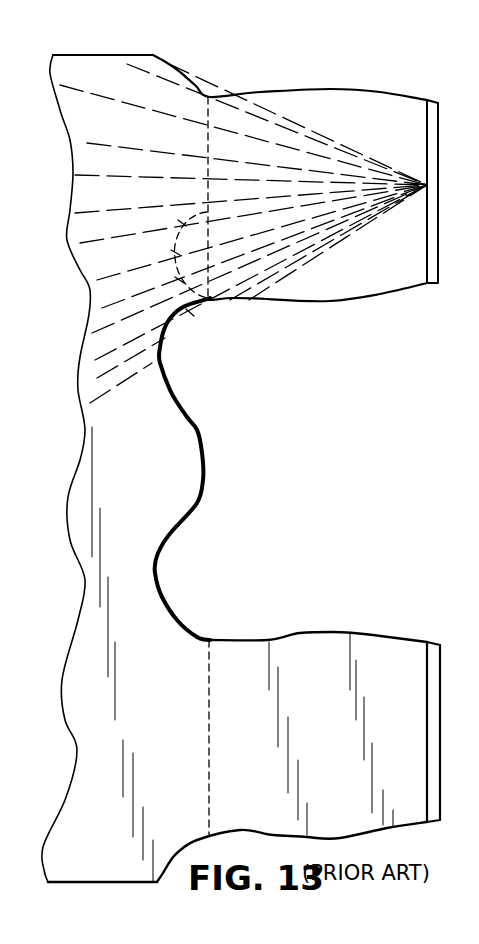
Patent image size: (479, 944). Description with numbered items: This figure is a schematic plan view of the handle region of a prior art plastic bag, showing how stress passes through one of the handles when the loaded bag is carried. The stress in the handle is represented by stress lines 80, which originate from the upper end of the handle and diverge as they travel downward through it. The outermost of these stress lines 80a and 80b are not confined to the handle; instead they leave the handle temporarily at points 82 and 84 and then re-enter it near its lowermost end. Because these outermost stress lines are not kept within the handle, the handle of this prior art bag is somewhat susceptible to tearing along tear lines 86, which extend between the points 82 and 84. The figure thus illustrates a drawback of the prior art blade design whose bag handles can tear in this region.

The stress lines 80 is at (295, 200).
The outermost stress line 80a is at (268, 122).
The outermost stress line 80b is at (210, 305).
The point 82 is at (208, 100).
The point 84 is at (224, 304).
The tear lines 86 is at (198, 330).